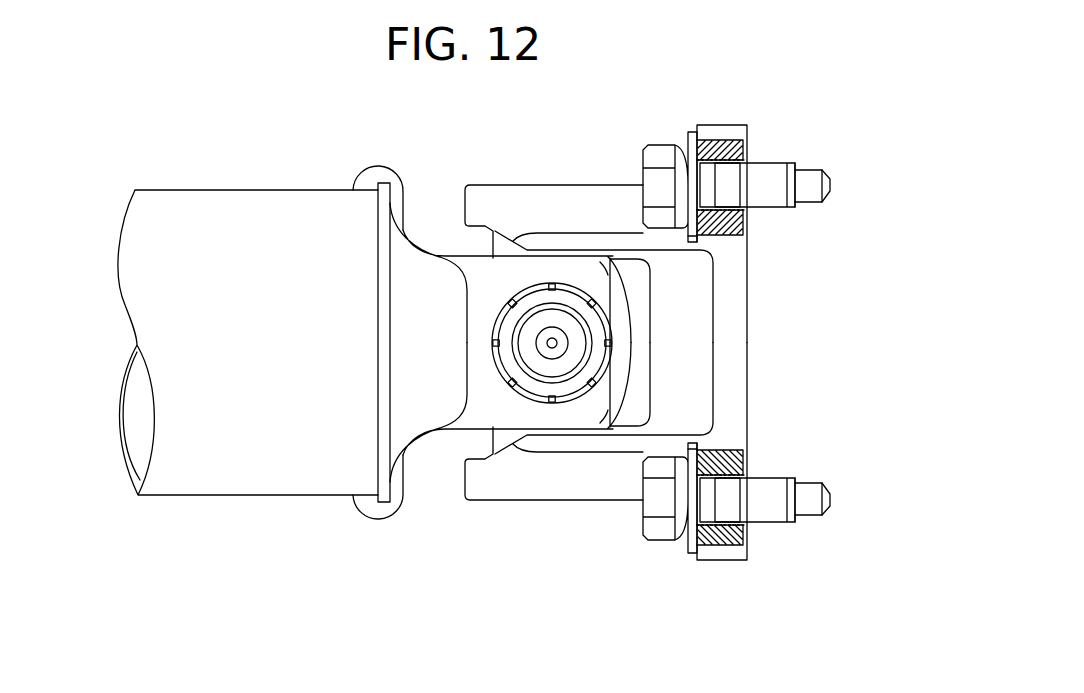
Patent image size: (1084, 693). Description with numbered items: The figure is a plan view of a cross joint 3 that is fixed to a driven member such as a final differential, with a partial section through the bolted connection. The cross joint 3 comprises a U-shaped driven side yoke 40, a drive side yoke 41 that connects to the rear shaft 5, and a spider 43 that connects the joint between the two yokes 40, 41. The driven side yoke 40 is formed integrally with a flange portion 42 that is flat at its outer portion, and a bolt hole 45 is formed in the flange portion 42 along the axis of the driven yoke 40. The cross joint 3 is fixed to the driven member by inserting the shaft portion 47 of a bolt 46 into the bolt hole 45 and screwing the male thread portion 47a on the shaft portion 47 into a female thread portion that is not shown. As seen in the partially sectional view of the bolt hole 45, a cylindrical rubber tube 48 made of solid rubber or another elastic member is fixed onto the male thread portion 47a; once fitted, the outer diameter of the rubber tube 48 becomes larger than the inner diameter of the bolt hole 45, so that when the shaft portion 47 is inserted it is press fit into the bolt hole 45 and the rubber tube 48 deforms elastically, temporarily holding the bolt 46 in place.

The cross joint 3 is at (508, 176).
The rear shaft 5 is at (242, 198).
The driven side yoke 40 is at (577, 196).
The drive side yoke 41 is at (397, 210).
The flange portion 42 is at (720, 130).
The spider 43 is at (500, 455).
The bolt hole 45 is at (750, 208).
The bolt 46 is at (816, 156).
The shaft portion 47 is at (830, 183).
The male thread portion 47a is at (796, 207).
The rubber tube 48 is at (745, 155).